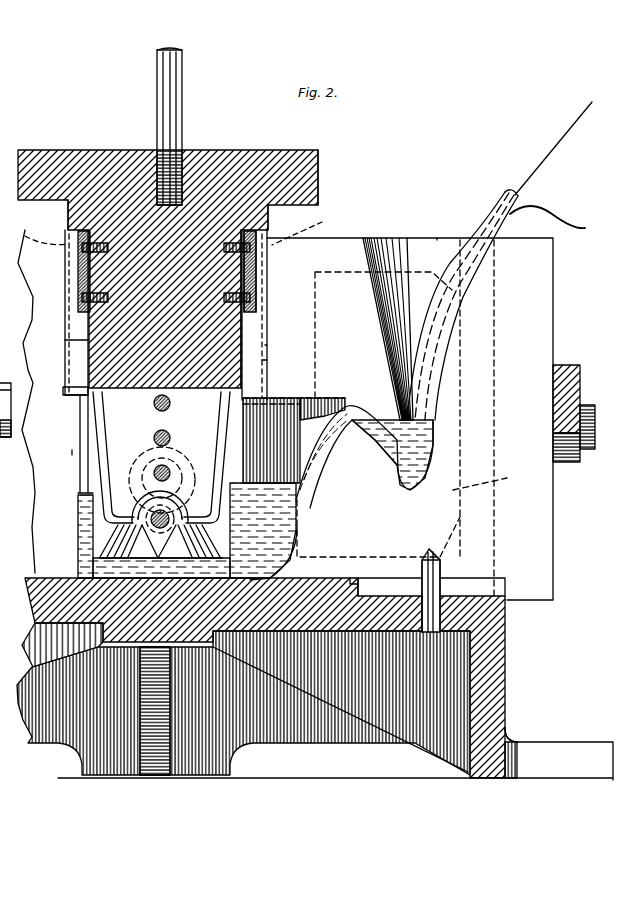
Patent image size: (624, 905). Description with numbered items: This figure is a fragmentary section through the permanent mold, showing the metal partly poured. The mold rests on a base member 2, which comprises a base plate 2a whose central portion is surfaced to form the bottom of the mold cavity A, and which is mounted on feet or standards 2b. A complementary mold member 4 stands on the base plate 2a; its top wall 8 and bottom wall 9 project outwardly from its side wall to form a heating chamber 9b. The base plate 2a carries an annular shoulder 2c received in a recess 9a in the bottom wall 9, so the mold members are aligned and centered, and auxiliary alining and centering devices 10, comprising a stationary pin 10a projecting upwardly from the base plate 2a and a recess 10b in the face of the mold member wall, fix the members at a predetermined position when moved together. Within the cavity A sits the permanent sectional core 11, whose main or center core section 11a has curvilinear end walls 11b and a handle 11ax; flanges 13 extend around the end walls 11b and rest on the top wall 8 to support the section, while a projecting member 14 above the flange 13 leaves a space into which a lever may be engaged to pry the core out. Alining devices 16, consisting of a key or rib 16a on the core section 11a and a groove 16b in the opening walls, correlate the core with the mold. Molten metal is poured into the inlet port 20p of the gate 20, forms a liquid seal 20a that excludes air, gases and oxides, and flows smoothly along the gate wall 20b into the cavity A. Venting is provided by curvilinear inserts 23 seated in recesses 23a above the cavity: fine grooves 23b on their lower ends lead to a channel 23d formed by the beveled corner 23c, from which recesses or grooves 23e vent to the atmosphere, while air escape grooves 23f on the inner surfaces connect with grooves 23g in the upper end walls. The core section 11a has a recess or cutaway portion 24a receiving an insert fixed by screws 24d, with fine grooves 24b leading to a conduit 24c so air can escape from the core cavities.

The base member 2 is at (505, 632).
The base plate 2a is at (62, 572).
The feet or standards 2b is at (503, 707).
The annular shoulder 2c is at (352, 585).
The complementary mold member 4 is at (550, 313).
The top wall 8 is at (350, 250).
The bottom wall 9 is at (330, 567).
The recess 9a is at (365, 580).
The heating chamber 9b is at (489, 477).
The auxiliary alining and centering devices 10 is at (446, 590).
The stationary pin 10a is at (433, 587).
The recess 10b is at (435, 557).
The permanent sectional core 11 is at (233, 158).
The main or center core section 11a is at (139, 127).
The handle 11ax is at (167, 92).
The curvilinear end wall 11b is at (263, 325).
The flange 13 is at (68, 218).
The projecting member 14 is at (318, 184).
The alining devices 16 is at (78, 270).
The key or rib 16a is at (258, 260).
The groove 16b is at (258, 282).
The gate 20 is at (447, 377).
The inlet port 20p is at (437, 238).
The liquid seal 20a is at (435, 460).
The gate wall 20b is at (312, 491).
The insert 23 is at (36, 284).
The recess 23a is at (263, 363).
The grooves 23b is at (70, 400).
The beveled corner 23c is at (72, 393).
The channel 23d is at (68, 393).
The recesses or grooves 23e is at (67, 322).
The air escape grooves 23f is at (88, 345).
The grooves 23g is at (172, 229).
The recess or cutaway portion 24a is at (154, 440).
The fine grooves 24b is at (110, 553).
The conduit 24c is at (198, 457).
The screws 24d is at (166, 431).
The mold cavity A is at (72, 452).